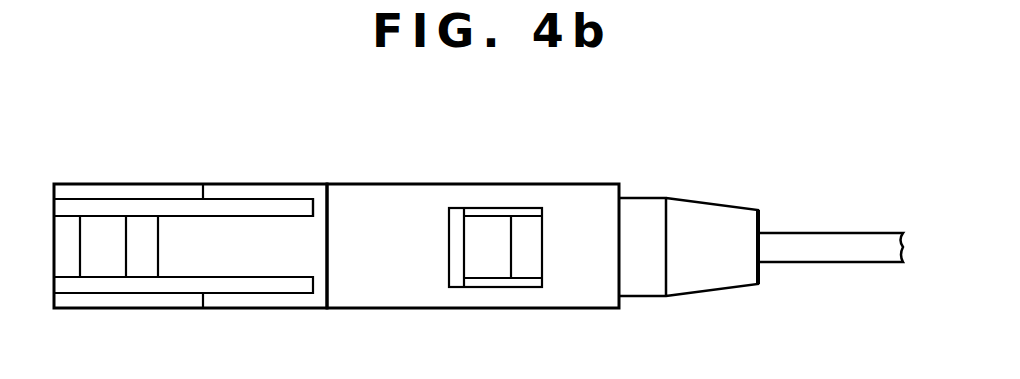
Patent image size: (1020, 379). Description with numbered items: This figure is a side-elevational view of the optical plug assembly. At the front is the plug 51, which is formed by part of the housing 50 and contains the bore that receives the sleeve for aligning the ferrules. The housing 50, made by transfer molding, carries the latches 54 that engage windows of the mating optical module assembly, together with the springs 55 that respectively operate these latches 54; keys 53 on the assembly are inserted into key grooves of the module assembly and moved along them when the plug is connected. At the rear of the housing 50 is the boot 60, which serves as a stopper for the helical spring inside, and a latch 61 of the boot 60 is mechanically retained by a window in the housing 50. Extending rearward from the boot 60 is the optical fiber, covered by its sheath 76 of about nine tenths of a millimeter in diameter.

The housing 50 is at (362, 198).
The plug 51 is at (80, 207).
The keys 53 is at (102, 188).
The latches 54 is at (142, 220).
The springs 55 is at (250, 228).
The latch 61 is at (523, 222).
The boot 60 is at (702, 210).
The sheath 76 is at (814, 237).